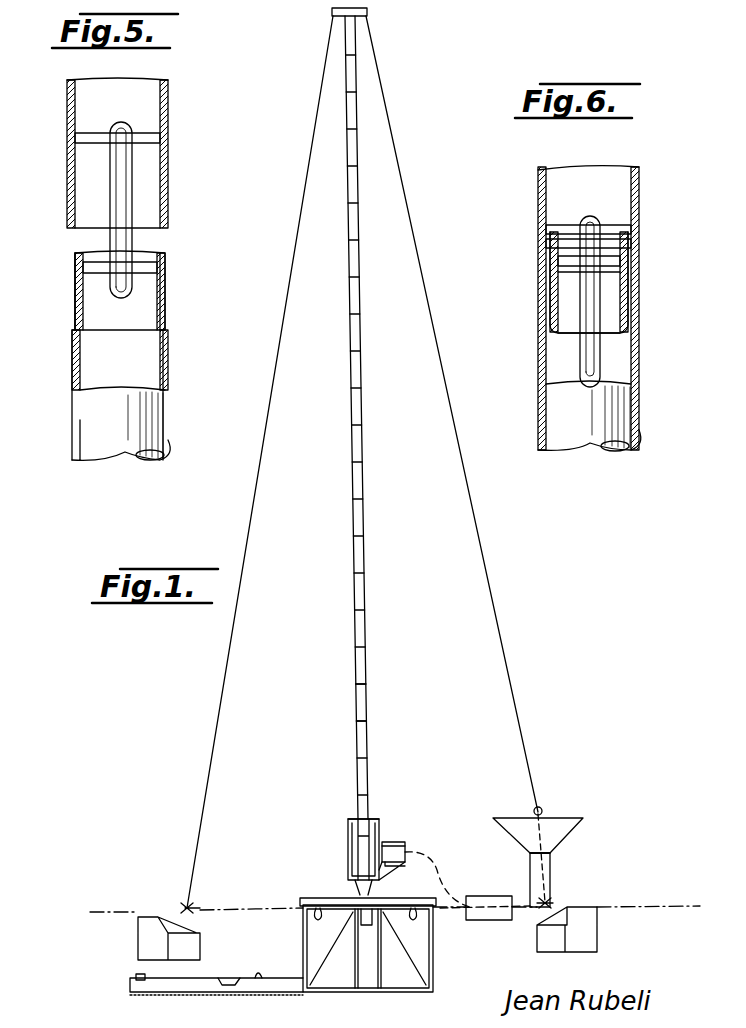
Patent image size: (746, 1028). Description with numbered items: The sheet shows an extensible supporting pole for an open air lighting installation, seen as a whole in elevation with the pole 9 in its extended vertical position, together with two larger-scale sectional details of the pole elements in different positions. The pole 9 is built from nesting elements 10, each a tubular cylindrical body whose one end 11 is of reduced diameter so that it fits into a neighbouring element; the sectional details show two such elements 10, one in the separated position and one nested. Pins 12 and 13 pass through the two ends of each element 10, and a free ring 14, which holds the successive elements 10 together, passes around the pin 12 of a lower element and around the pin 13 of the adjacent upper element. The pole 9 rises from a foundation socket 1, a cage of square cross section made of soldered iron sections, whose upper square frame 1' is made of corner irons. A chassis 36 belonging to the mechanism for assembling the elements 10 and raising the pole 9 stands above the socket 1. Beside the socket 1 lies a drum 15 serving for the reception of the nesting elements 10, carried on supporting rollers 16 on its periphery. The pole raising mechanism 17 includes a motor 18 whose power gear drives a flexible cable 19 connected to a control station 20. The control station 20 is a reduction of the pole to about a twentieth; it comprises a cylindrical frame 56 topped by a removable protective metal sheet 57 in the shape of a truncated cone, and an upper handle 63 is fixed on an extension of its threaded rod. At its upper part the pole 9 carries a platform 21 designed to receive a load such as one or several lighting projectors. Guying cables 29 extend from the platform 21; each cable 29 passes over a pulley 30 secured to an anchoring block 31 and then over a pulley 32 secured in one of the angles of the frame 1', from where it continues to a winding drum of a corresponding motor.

In FIG. 1, the foundation socket 1 is at (386, 948).
In FIG. 1, the upper square frame 1' is at (368, 888).
In FIG. 1, the pole 9 is at (368, 578).
In FIG. 5, the nesting elements 10 is at (170, 186).
In FIG. 6, the nesting elements 10 is at (545, 350).
In FIG. 1, the nesting elements 10 is at (364, 710).
In FIG. 5, the reduced-diameter end 11 is at (166, 282).
In FIG. 5, the pin 12 is at (98, 266).
In FIG. 6, the pin 12 is at (612, 262).
In FIG. 5, the pin 13 is at (148, 140).
In FIG. 6, the pin 13 is at (612, 228).
In FIG. 5, the free ring 14 is at (110, 171).
In FIG. 6, the free ring 14 is at (596, 310).
In FIG. 1, the drum 15 is at (130, 989).
In FIG. 1, the supporting rollers 16 is at (140, 975).
In FIG. 1, the pole raising mechanism 17 is at (388, 830).
In FIG. 1, the motor 18 is at (400, 844).
In FIG. 1, the flexible cable 19 is at (437, 874).
In FIG. 1, the control station 20 is at (566, 860).
In FIG. 1, the platform 21 is at (367, 12).
In FIG. 1, the guying cable 29 is at (296, 233).
In FIG. 1, the pulley 30 is at (192, 905).
In FIG. 1, the anchoring block 31 is at (140, 942).
In FIG. 1, the pulley 32 is at (318, 908).
In FIG. 1, the chassis 36 is at (346, 838).
In FIG. 1, the cylindrical frame 56 is at (551, 872).
In FIG. 1, the protective metal sheet 57 is at (570, 828).
In FIG. 1, the upper handle 63 is at (540, 806).